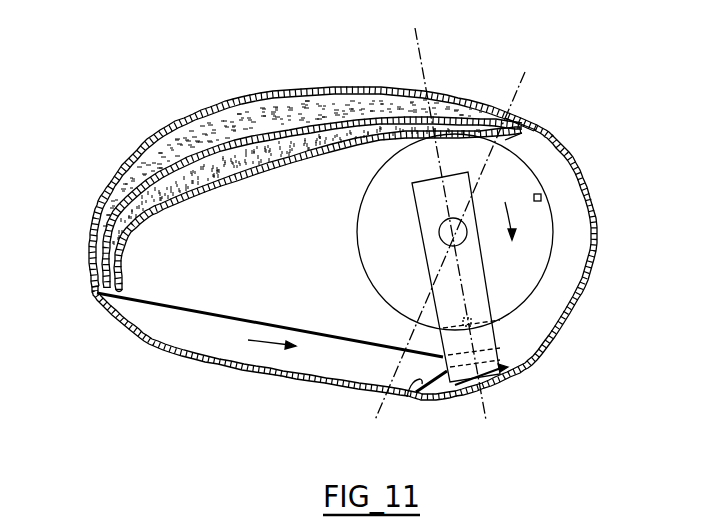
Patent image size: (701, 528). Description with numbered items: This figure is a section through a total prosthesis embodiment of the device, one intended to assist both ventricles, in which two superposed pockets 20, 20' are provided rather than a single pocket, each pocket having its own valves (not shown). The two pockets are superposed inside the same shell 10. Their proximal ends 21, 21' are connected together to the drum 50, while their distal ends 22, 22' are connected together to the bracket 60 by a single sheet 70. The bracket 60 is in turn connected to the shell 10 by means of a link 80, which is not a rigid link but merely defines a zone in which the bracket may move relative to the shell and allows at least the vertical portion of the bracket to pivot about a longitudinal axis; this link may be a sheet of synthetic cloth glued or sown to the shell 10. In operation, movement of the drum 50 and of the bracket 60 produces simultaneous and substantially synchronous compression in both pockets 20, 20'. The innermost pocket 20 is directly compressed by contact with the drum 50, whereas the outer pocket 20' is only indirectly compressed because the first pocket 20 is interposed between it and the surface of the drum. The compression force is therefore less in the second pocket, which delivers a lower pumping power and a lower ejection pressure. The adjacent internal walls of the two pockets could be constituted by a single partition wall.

The shell 10 is at (553, 333).
The pocket 20 is at (317, 208).
The pocket 20' is at (314, 176).
The proximal end 21 is at (558, 134).
The proximal end 21' is at (343, 186).
The distal end 22 is at (149, 283).
The distal end 22' is at (68, 272).
The drum 50 is at (535, 233).
The bracket 60 is at (487, 332).
The sheet 70 is at (300, 330).
The link 80 is at (385, 400).